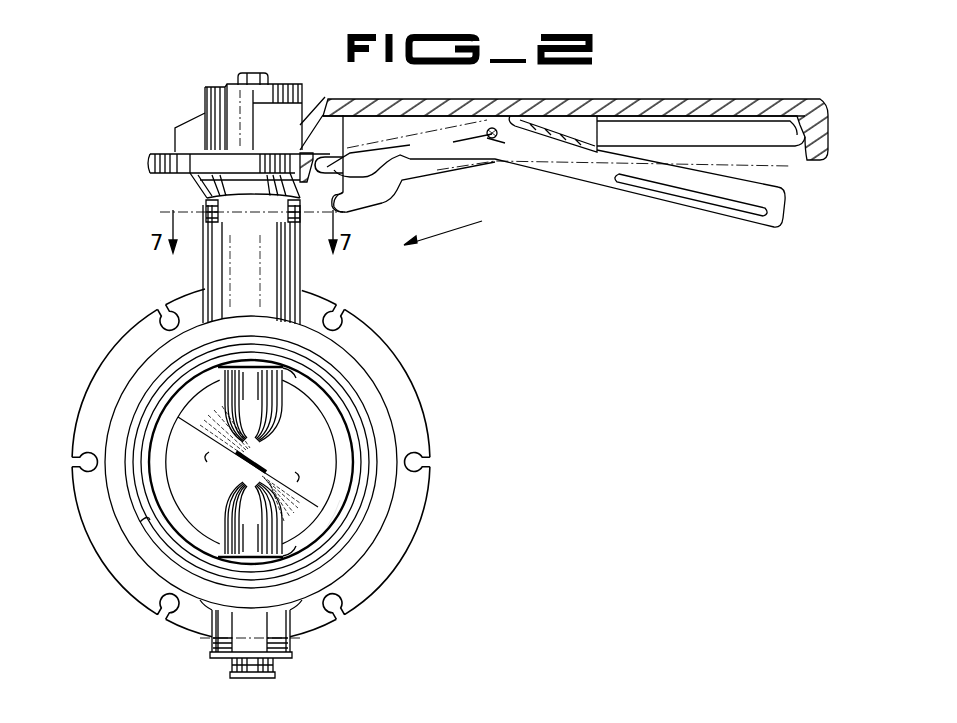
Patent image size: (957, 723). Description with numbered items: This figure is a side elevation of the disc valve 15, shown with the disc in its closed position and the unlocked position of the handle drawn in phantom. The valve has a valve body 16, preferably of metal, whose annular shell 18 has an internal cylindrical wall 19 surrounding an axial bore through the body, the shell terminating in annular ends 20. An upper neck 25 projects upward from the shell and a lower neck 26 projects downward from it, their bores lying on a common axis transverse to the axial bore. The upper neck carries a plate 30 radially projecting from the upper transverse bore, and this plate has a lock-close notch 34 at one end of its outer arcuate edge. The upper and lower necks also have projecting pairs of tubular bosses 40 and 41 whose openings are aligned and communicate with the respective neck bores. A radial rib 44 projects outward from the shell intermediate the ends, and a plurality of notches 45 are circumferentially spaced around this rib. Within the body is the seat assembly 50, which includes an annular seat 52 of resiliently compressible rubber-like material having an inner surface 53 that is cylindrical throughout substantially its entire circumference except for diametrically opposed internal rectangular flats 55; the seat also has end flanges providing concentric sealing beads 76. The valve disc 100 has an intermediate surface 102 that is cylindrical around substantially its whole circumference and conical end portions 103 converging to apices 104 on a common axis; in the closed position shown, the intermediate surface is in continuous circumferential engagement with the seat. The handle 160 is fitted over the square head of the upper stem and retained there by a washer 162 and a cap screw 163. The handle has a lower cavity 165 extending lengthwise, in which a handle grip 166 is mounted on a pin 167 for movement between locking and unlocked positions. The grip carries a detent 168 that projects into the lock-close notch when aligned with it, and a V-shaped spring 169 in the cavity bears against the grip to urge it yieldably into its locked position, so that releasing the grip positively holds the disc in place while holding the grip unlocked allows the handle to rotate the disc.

The disc valve 15 is at (458, 227).
The valve body 16 is at (423, 402).
The annular shell 18 is at (390, 423).
The internal cylindrical wall 19 is at (145, 525).
The annular ends 20 is at (388, 443).
The upper neck 25 is at (215, 270).
The lower neck 26 is at (240, 637).
The plate 30 is at (150, 158).
The lock-close notch 34 is at (318, 157).
The tubular bosses 40 is at (288, 210).
The tubular bosses 41 is at (272, 664).
The radial rib 44 is at (135, 336).
The notches 45 is at (160, 302).
The seat assembly 50 is at (360, 391).
The annular seat 52 is at (367, 513).
The inner surface 53 is at (327, 527).
The internal rectangular flats 55 is at (290, 560).
The concentric sealing beads 76 is at (166, 392).
The valve disc 100 is at (325, 456).
The intermediate surface 102 is at (158, 424).
The conical end portions 103 is at (167, 490).
The apices 104 is at (250, 468).
The handle 160 is at (692, 100).
The washer 162 is at (222, 82).
The cap screw 163 is at (252, 72).
The lower cavity 165 is at (735, 118).
The handle grip 166 is at (722, 205).
The pin 167 is at (490, 127).
The detent 168 is at (355, 160).
The V-shaped spring 169 is at (555, 116).